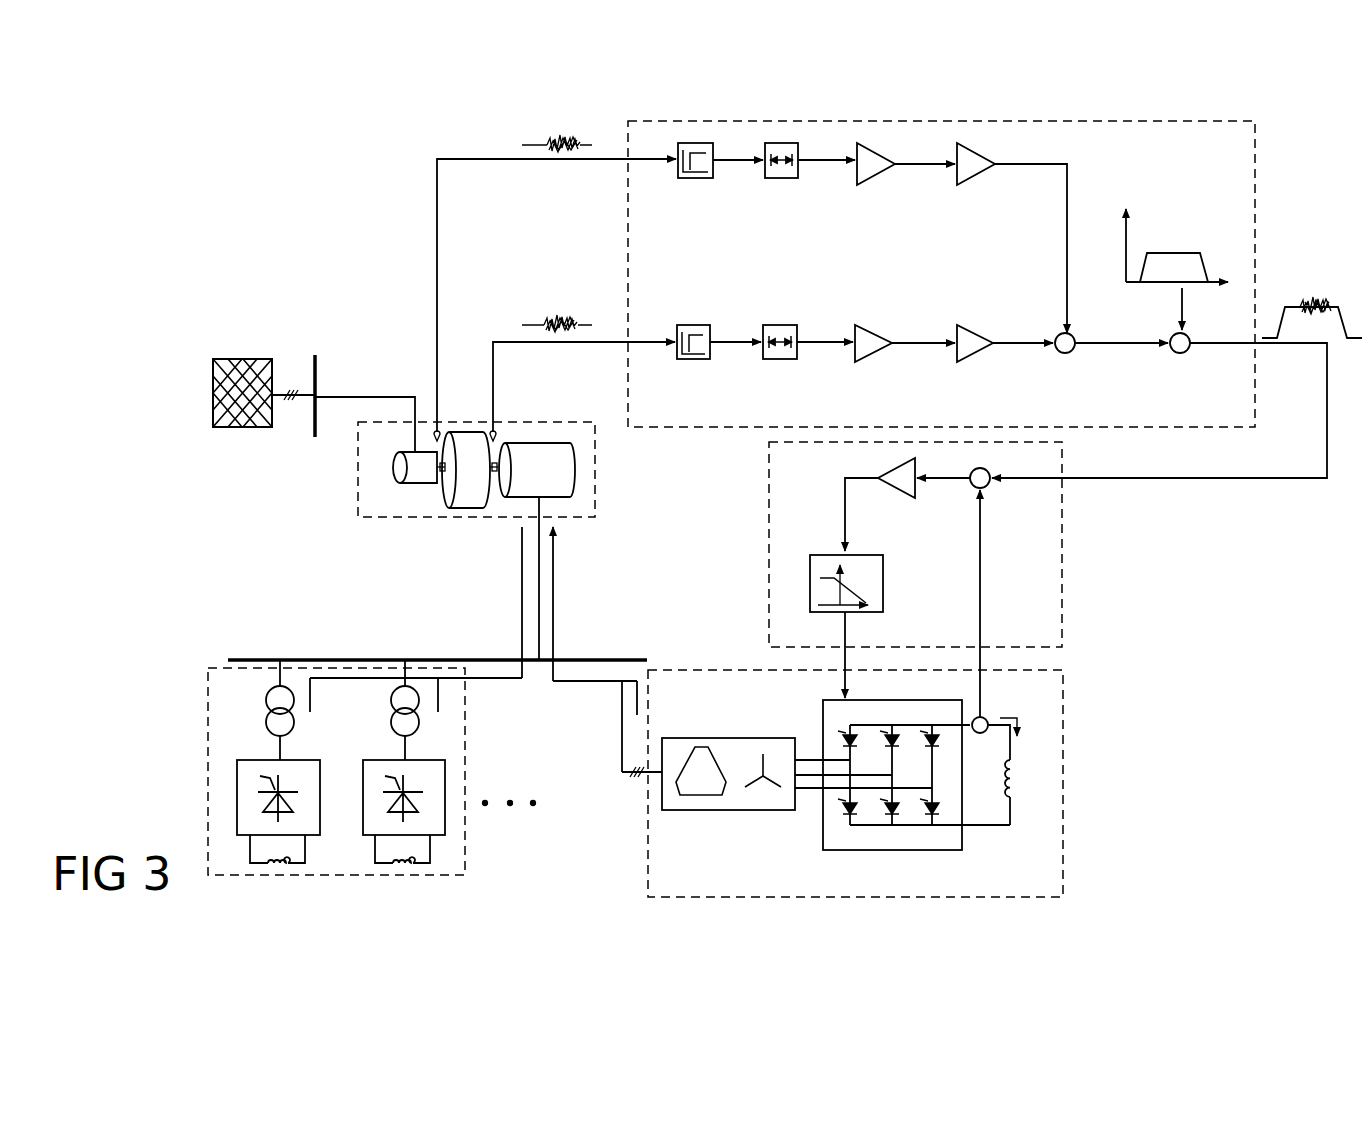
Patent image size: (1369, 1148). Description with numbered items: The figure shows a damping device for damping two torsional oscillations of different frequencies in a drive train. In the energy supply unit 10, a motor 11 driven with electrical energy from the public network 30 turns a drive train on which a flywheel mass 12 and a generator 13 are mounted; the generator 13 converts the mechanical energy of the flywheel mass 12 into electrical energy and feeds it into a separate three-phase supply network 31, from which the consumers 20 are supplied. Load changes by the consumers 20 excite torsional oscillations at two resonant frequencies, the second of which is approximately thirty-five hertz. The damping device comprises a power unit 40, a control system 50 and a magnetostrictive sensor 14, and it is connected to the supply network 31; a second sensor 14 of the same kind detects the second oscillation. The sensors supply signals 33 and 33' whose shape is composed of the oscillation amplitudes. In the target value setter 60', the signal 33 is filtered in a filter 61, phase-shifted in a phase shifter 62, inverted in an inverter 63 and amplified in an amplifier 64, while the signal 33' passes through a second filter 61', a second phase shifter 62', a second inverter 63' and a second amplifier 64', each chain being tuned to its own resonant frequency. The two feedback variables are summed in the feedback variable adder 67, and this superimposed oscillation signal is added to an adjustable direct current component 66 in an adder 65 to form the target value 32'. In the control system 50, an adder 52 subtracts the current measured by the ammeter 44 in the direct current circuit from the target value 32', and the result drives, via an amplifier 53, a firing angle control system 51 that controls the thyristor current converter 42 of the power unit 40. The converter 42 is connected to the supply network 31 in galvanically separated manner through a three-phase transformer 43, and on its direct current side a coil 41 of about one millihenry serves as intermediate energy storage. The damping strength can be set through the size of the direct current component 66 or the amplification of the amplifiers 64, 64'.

The energy supply unit 10 is at (358, 488).
The motor 11 is at (413, 485).
The flywheel mass 12 is at (462, 510).
The generator 13 is at (575, 460).
The sensor 14 is at (432, 428).
The consumers 20 is at (465, 845).
The public network 30 is at (245, 360).
The supply network 31 is at (343, 657).
The target value 32' is at (1312, 290).
The signal 33 is at (584, 339).
The signal 33' is at (556, 253).
The power unit 40 is at (1063, 760).
The coil 41 is at (1017, 775).
The current converter 42 is at (912, 850).
The transformer 43 is at (725, 810).
The ammeter 44 is at (988, 720).
The control system 50 is at (1062, 552).
The firing angle control system 51 is at (883, 580).
The adder 52 is at (990, 490).
The amplifier 53 is at (910, 500).
The target value setter 60' is at (941, 257).
The filter 61 is at (694, 364).
The second filter 61' is at (697, 187).
The phase shifter 62 is at (782, 364).
The second phase shifter 62' is at (786, 187).
The inverter 63 is at (873, 364).
The second inverter 63' is at (877, 184).
The amplifier 64 is at (975, 364).
The second amplifier 64' is at (977, 184).
The adder 65 is at (1185, 355).
The direct current component 66 is at (1173, 252).
The feedback variable adder 67 is at (1070, 355).